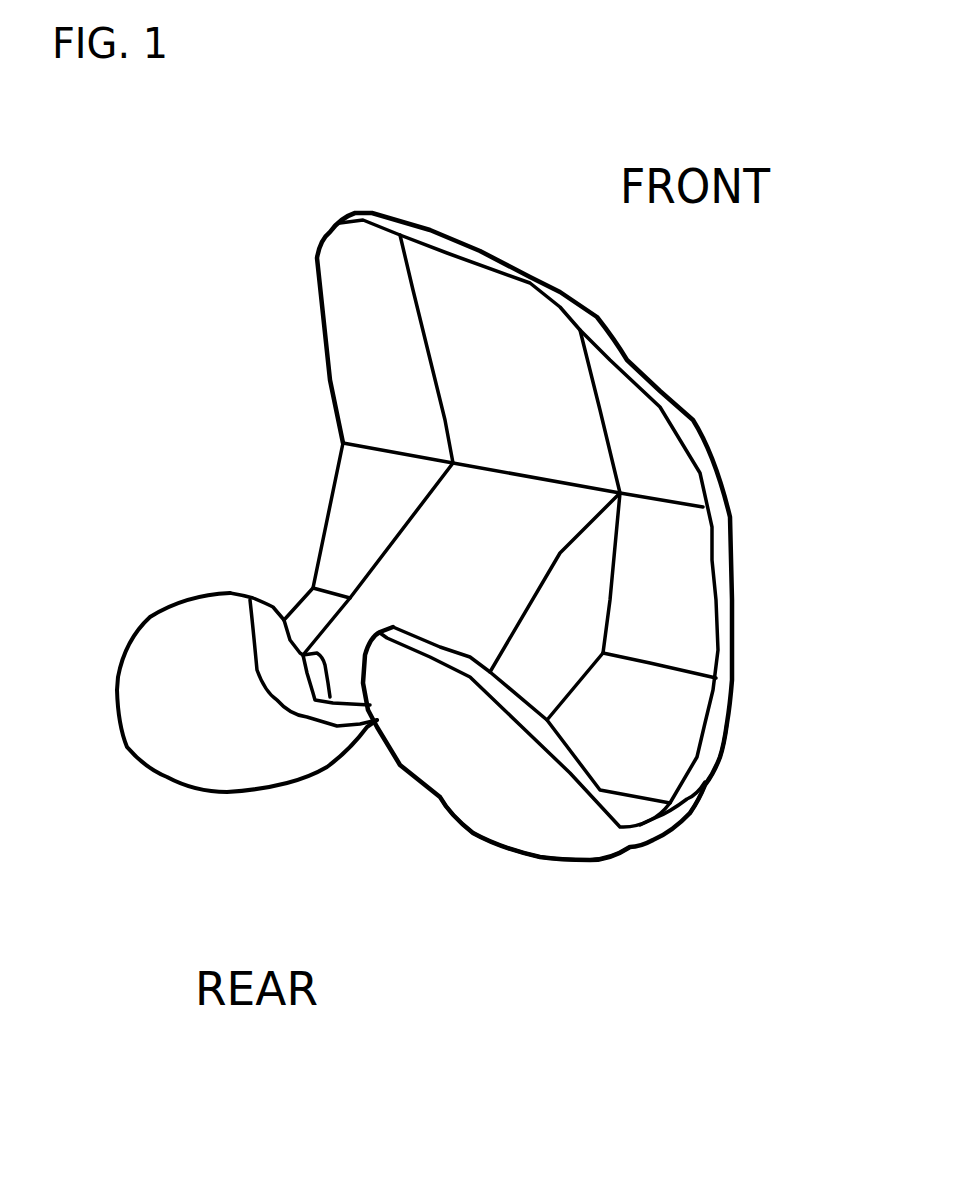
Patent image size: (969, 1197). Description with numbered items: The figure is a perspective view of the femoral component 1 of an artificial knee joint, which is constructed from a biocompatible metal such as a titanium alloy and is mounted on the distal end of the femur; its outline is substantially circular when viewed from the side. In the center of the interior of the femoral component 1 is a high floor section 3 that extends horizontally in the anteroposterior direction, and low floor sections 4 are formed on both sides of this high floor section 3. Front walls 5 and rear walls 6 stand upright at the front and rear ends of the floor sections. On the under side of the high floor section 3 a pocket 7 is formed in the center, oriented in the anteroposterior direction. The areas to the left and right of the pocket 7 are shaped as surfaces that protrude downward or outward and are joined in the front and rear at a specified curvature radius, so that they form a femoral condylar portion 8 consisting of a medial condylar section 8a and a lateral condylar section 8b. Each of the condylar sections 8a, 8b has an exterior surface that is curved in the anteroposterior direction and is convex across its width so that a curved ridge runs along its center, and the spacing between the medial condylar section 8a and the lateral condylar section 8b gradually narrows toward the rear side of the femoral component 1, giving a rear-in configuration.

The femoral component 1 is at (750, 617).
The high floor section 3 is at (533, 560).
The low floor sections 4 is at (303, 633).
The front walls 5 is at (557, 353).
The rear walls 6 is at (330, 697).
The pocket 7 is at (410, 798).
The femoral condylar portion 8 is at (650, 855).
The medial condylar section 8a is at (593, 857).
The lateral condylar section 8b is at (238, 793).